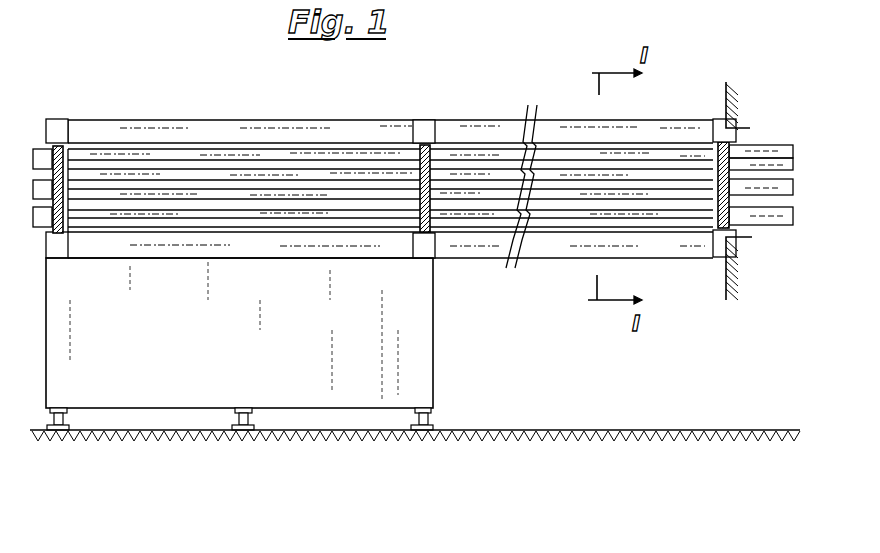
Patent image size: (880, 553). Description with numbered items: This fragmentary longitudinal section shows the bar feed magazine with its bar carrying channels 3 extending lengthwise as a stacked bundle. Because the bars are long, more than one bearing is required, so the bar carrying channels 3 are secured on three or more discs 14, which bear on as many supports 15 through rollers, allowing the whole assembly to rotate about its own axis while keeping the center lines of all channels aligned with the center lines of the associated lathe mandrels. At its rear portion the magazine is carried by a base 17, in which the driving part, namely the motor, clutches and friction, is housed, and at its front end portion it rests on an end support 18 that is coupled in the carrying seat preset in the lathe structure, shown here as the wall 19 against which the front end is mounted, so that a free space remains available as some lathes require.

The bar carrying channels 3 is at (478, 158).
The discs 14 is at (722, 167).
The supports 15 is at (423, 248).
The base 17 is at (145, 387).
The end support 18 is at (714, 243).
The wall 19 is at (731, 275).